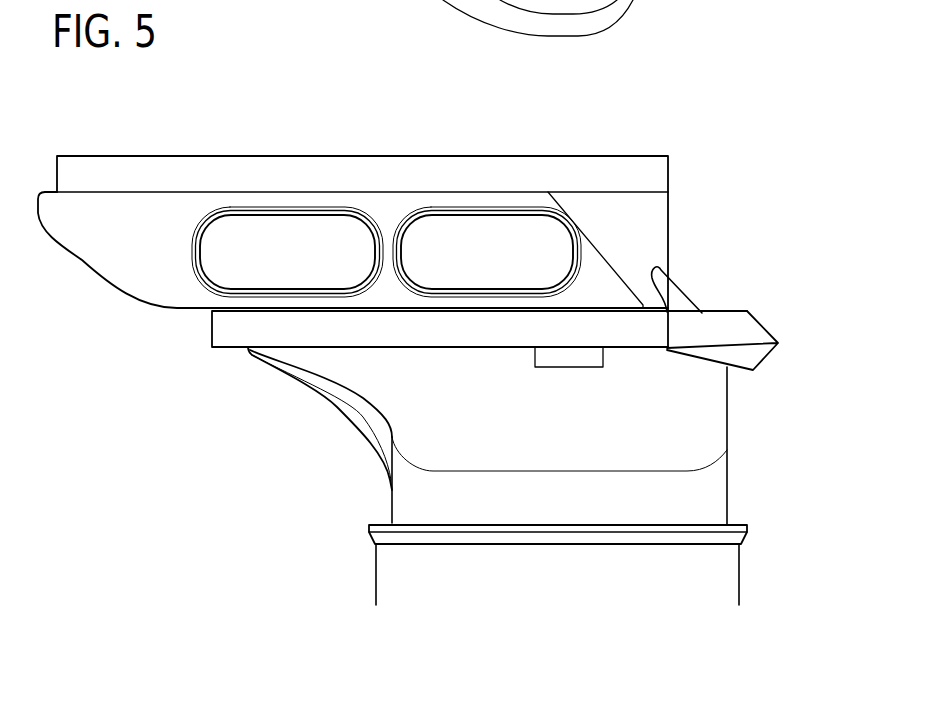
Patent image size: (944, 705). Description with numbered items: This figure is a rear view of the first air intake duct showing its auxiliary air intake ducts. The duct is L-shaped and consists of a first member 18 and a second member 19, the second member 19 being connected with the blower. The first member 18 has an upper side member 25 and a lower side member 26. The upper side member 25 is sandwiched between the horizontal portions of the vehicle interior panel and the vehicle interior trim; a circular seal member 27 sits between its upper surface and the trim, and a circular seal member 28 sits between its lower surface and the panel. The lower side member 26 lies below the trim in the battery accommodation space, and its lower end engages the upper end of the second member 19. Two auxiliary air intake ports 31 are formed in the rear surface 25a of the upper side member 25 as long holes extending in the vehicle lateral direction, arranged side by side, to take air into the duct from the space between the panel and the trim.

The first member 18 is at (690, 208).
The second member 19 is at (754, 569).
The upper side member 25 is at (82, 260).
The rear surface 25a is at (175, 210).
The lower side member 26 is at (727, 427).
The circular seal member 27 is at (593, 157).
The circular seal member 28 is at (218, 328).
The auxiliary air intake port 31 is at (286, 217).